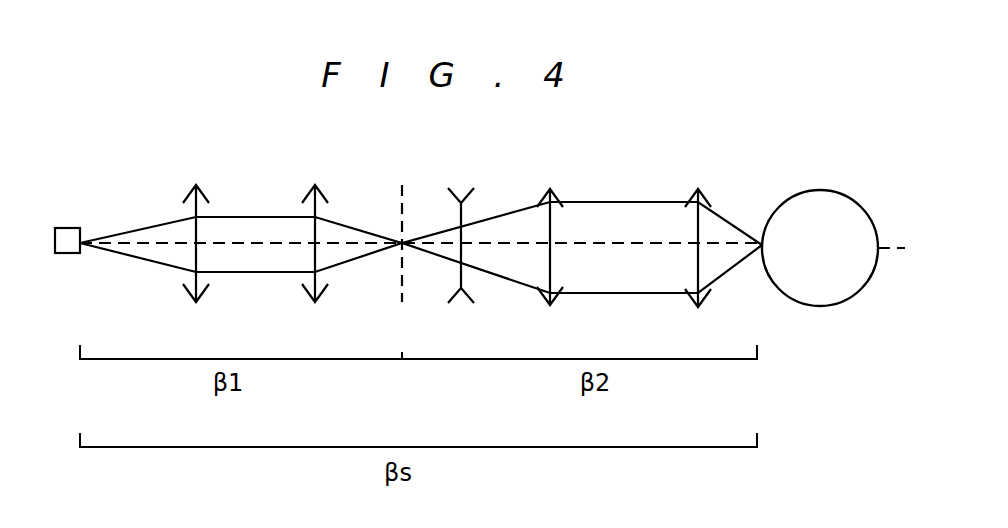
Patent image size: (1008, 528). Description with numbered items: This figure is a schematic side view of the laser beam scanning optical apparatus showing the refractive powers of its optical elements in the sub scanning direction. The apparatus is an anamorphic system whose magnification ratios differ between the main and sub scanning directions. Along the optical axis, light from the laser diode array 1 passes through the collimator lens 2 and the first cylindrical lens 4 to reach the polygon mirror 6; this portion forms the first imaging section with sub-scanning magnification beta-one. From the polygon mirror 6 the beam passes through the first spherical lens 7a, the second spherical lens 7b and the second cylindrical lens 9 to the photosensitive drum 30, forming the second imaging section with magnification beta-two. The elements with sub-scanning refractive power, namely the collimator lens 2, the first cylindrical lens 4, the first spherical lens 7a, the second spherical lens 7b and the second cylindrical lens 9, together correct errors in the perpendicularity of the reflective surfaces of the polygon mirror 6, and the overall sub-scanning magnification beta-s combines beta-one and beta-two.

The laser diode array 1 is at (60, 222).
The collimator lens 2 is at (196, 227).
The first cylindrical lens 4 is at (315, 227).
The polygon mirror 6 is at (400, 227).
The first spherical lens 7a is at (459, 227).
The second spherical lens 7b is at (551, 228).
The second cylindrical lens 9 is at (698, 229).
The photosensitive drum 30 is at (820, 229).